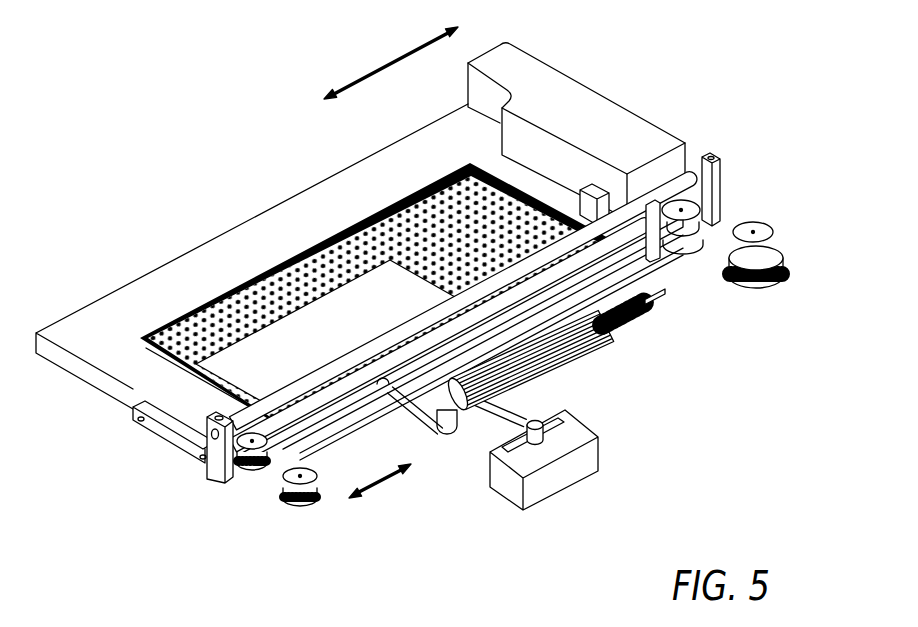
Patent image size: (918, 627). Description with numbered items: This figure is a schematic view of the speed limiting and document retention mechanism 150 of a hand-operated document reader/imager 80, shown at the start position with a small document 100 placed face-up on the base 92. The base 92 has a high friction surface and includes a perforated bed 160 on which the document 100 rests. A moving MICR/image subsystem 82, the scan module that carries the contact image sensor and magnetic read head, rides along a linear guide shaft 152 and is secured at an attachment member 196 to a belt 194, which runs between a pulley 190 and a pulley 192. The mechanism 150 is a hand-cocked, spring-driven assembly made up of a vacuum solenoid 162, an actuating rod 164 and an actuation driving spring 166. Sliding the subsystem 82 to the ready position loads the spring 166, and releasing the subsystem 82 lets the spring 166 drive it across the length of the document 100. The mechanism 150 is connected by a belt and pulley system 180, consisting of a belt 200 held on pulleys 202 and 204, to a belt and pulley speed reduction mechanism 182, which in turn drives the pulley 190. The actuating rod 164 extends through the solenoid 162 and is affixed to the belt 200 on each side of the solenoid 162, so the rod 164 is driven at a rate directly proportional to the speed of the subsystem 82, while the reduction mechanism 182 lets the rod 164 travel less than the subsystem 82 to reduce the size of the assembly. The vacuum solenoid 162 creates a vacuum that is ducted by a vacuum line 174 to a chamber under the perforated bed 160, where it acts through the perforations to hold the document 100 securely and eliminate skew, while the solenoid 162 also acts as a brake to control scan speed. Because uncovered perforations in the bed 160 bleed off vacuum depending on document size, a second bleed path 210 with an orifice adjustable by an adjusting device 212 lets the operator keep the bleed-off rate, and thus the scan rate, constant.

The document reader/imager 80 is at (266, 165).
The moving MICR/image subsystem 82 is at (584, 80).
The base 92 is at (417, 190).
The document 100 is at (341, 343).
The speed limiting and document retention mechanism 150 is at (609, 465).
The linear guide shaft 152 is at (238, 404).
The perforated bed 160 is at (268, 300).
The vacuum solenoid 162 is at (592, 352).
The actuating rod 164 is at (437, 430).
The actuation driving spring 166 is at (640, 322).
The vacuum line 174 is at (418, 418).
The belt and pulley system 180 is at (296, 516).
The belt and pulley speed reduction mechanism 182 is at (733, 209).
The pulley 190 is at (720, 172).
The pulley 192 is at (250, 468).
The belt 194 is at (283, 450).
The attachment member 196 is at (645, 285).
The belt 200 is at (320, 495).
The pulley 202 is at (772, 226).
The pulley 204 is at (306, 505).
The second bleed path 210 is at (541, 420).
The adjusting device 212 is at (582, 478).